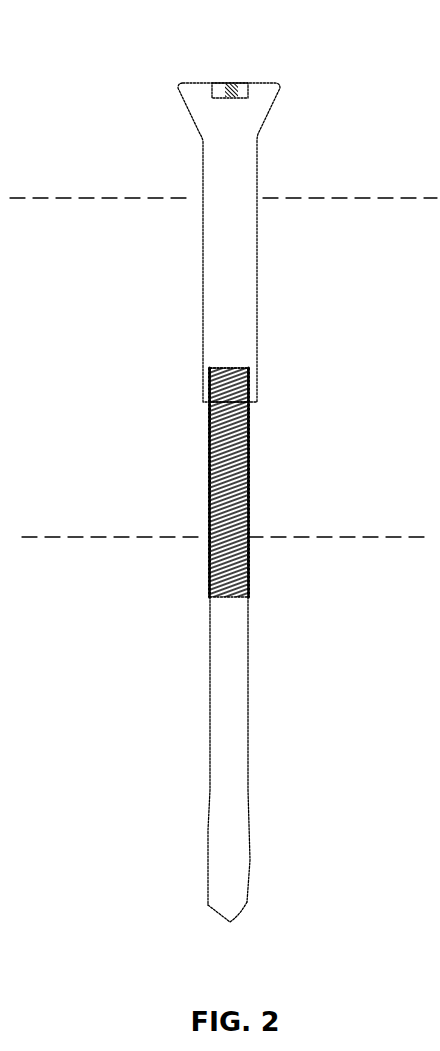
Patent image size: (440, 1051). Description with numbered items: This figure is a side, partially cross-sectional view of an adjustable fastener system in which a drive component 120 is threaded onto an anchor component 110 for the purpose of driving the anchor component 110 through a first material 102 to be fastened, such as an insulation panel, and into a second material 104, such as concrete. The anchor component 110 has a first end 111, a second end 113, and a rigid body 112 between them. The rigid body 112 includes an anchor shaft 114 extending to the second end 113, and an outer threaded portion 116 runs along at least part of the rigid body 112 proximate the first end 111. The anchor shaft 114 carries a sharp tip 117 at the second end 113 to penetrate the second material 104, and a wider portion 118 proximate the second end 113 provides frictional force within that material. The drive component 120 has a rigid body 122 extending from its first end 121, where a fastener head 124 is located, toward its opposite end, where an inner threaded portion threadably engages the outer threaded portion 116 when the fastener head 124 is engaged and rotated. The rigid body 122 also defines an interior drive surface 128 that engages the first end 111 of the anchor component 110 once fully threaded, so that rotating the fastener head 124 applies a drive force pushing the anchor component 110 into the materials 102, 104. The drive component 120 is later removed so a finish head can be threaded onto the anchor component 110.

The first material 102 is at (65, 197).
The second material 104 is at (72, 537).
The anchor component 110 is at (220, 646).
The first end 111 is at (228, 368).
The rigid body 112 is at (242, 606).
The second end 113 is at (214, 908).
The anchor shaft 114 is at (286, 751).
The outer threaded portion 116 is at (249, 488).
The sharp tip 117 is at (229, 921).
The wider portion 118 is at (281, 918).
The drive component 120 is at (228, 212).
The first end 121 is at (265, 83).
The rigid body 122 is at (257, 283).
The fastener head 124 is at (272, 97).
The interior drive surface 128 is at (217, 385).